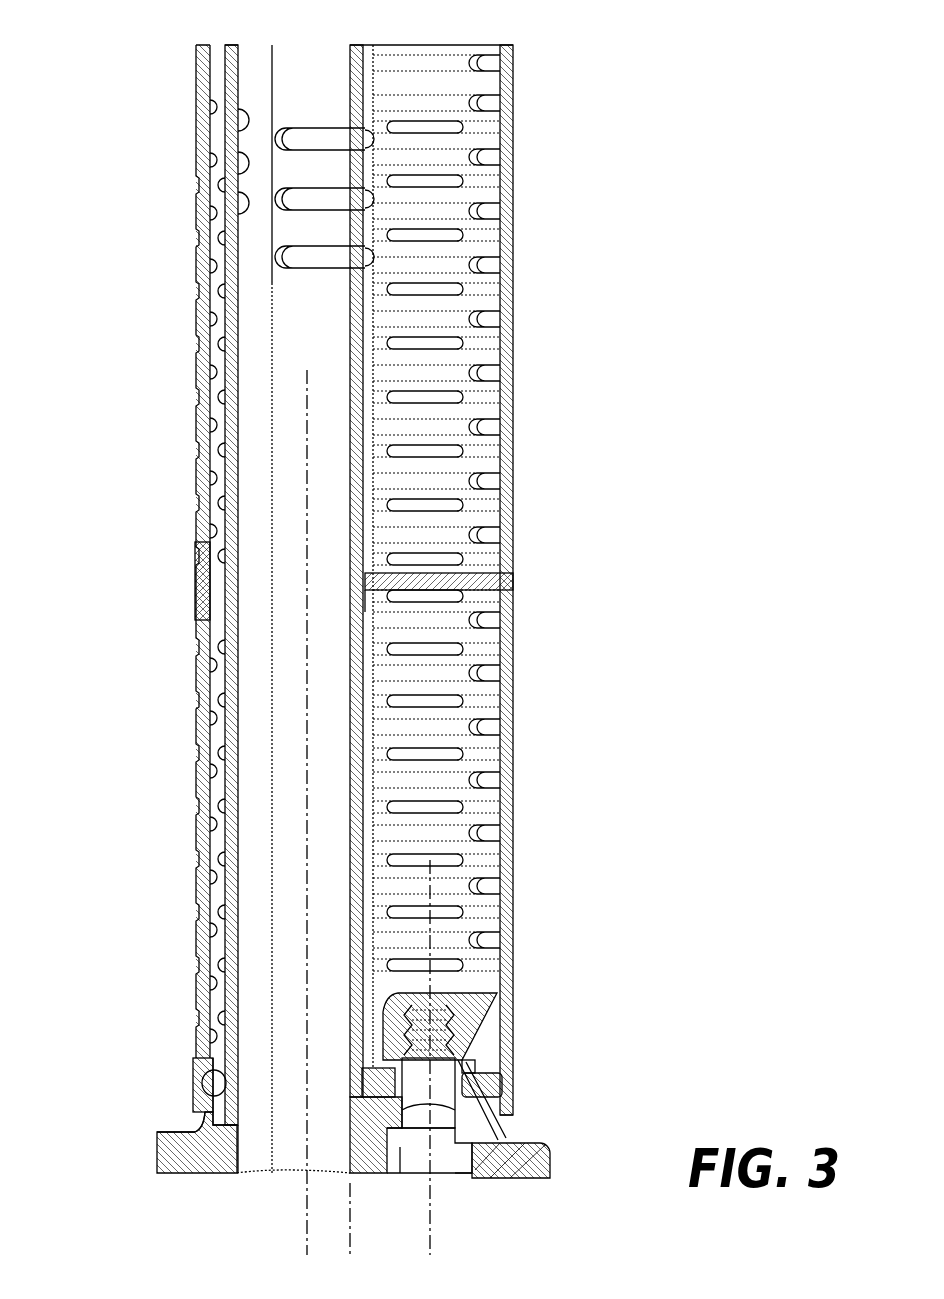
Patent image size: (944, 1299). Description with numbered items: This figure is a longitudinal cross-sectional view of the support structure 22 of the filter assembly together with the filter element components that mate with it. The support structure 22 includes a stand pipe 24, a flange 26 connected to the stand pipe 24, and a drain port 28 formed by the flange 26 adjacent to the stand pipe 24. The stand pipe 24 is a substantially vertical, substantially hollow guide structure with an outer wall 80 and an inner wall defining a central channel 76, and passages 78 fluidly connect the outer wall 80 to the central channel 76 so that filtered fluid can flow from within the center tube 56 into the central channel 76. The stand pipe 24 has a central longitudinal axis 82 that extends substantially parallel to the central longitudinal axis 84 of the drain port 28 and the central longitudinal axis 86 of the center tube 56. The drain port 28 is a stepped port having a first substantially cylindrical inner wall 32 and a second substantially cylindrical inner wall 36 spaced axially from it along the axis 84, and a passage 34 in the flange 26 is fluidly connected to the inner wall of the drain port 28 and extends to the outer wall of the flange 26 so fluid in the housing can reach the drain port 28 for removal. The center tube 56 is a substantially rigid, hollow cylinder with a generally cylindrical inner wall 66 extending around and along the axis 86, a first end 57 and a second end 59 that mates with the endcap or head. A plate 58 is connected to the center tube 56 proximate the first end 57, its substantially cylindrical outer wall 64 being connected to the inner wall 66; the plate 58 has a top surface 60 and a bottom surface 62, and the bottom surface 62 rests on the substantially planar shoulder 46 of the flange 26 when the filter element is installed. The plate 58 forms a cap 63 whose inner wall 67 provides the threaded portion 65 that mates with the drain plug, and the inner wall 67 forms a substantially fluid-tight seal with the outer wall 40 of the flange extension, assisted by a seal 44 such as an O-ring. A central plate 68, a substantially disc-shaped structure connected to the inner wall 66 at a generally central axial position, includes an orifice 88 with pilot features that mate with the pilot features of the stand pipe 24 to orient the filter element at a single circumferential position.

The support structure 22 is at (208, 1188).
The stand pipe 24 is at (254, 795).
The flange 26 is at (513, 1060).
The drain port 28 is at (459, 1179).
The first inner wall 32 is at (394, 1174).
The passage 34 is at (518, 1180).
The second inner wall 36 is at (497, 1119).
The outer wall 40 is at (513, 1089).
The seal 44 is at (513, 1057).
The shoulder 46 is at (512, 1096).
The center tube 56 is at (508, 150).
The first end 57 is at (118, 1053).
The plate 58 is at (200, 1075).
The second end 59 is at (172, 28).
The top surface 60 is at (213, 1057).
The bottom surface 62 is at (157, 1137).
The cap 63 is at (440, 1003).
The outer wall 64 is at (197, 1083).
The threaded portion 65 is at (498, 1000).
The inner wall 66 is at (502, 249).
The inner wall 67 is at (486, 1040).
The central plate 68 is at (468, 577).
The central channel 76 is at (315, 1020).
The passages 78 is at (313, 147).
The outer wall 80 is at (205, 665).
The central longitudinal axis 82 is at (306, 1236).
The central longitudinal axis 84 is at (432, 1231).
The central longitudinal axis 86 is at (352, 1222).
The orifice 88 is at (374, 566).